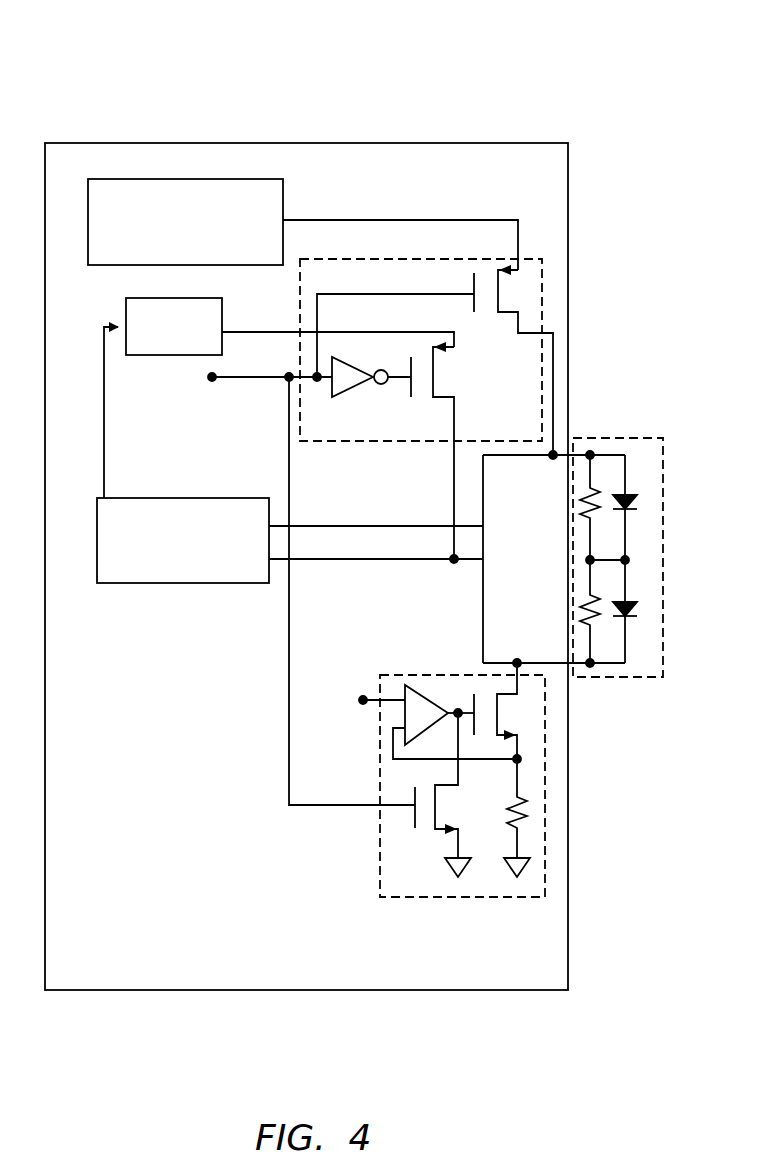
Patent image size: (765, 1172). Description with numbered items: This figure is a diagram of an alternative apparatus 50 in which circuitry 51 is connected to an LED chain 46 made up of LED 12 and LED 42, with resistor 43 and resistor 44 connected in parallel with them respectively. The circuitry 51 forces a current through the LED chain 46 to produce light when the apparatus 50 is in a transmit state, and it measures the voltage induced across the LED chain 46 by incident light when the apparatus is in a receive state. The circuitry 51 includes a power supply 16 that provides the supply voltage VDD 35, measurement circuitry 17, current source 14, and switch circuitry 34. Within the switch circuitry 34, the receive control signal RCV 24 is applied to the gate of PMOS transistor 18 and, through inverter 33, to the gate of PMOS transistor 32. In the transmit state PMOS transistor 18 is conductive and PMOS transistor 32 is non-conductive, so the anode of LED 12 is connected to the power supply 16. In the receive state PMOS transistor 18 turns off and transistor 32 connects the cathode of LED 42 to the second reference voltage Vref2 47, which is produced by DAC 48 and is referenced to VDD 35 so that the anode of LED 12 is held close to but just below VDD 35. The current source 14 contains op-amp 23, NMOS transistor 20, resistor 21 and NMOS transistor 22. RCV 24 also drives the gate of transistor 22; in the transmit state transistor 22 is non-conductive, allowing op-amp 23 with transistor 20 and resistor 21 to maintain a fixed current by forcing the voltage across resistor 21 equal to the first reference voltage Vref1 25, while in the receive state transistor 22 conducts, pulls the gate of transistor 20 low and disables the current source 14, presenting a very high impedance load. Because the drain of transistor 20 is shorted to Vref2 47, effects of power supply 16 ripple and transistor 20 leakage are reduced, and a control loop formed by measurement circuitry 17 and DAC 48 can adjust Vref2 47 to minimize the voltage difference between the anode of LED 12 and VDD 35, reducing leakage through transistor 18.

The apparatus 50 is at (610, 58).
The circuitry 51 is at (300, 143).
The power supply 16 is at (112, 178).
The supply voltage (VDD) 35 is at (405, 219).
The switch circuitry 34 is at (545, 272).
The PMOS transistor 18 is at (520, 298).
The DAC 48 is at (125, 315).
The second reference voltage (Vref2) 47 is at (283, 330).
The inverter 33 is at (360, 358).
The PMOS transistor 32 is at (437, 396).
The RCV 24 is at (240, 378).
The measurement circuitry 17 is at (163, 583).
The LED chain 46 is at (625, 438).
The resistor 43 is at (580, 516).
The resistor 44 is at (580, 622).
The LED 12 is at (637, 503).
The LED 42 is at (637, 608).
The current source 14 is at (480, 897).
The first reference voltage (Vref1) 25 is at (362, 698).
The op-amp 23 is at (425, 692).
The NMOS transistor 20 is at (497, 713).
The resistor 21 is at (527, 815).
The NMOS transistor 22 is at (440, 832).